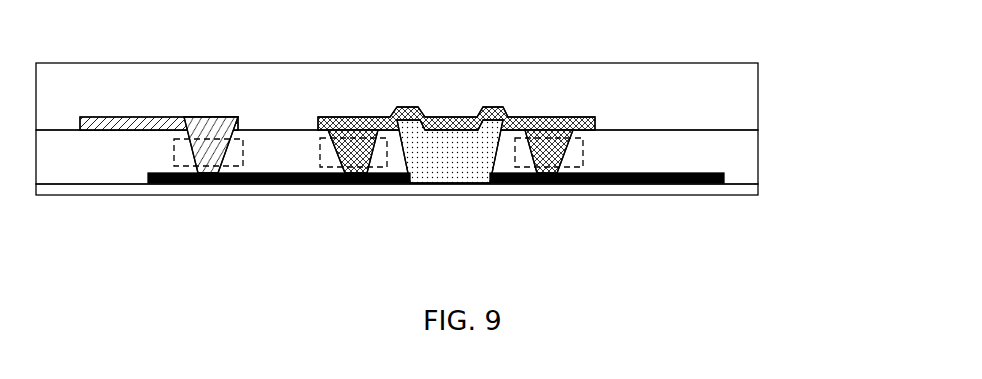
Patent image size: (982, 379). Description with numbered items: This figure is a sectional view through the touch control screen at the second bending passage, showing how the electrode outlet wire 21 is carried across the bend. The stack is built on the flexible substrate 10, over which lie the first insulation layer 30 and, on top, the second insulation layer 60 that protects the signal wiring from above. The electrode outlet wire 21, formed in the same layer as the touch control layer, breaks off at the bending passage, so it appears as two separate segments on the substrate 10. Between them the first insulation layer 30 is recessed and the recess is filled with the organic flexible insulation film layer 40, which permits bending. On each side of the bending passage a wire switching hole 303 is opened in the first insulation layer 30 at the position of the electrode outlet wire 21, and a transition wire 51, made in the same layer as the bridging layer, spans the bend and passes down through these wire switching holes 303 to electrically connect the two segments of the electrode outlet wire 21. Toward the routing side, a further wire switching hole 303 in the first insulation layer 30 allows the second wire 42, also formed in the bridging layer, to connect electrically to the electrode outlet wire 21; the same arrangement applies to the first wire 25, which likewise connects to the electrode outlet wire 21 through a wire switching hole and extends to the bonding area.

The flexible substrate 10 is at (752, 192).
The first insulation layer 30 is at (747, 142).
The second insulation layer 60 is at (747, 79).
The electrode outlet wire 21 is at (280, 185).
The wire switching hole 303 is at (174, 160).
The organic flexible insulation film layer 40 is at (452, 167).
The transition wire 51 is at (462, 117).
The second wire 42 is at (170, 96).
The first wire 25 is at (197, 117).